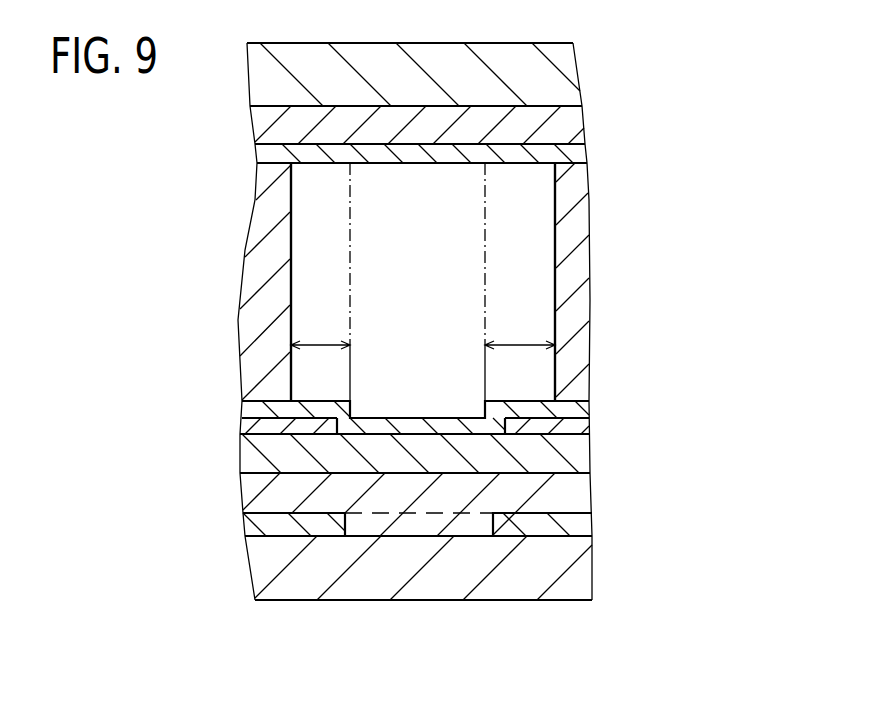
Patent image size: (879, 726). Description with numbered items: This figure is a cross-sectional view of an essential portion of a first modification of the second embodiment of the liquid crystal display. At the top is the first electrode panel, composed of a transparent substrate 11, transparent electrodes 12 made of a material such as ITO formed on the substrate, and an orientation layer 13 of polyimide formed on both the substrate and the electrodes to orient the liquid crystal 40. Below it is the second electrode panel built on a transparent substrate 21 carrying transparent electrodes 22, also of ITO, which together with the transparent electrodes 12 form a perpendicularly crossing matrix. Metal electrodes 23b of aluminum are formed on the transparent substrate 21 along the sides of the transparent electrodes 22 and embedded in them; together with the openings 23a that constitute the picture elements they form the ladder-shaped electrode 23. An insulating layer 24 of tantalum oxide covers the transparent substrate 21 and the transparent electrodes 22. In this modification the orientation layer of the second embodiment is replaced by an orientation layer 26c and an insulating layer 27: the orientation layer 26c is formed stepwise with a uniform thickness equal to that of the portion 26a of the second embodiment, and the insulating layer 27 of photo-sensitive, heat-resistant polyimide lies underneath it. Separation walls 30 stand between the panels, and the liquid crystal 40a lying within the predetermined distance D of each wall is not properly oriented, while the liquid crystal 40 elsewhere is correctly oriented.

The transparent substrate 11 is at (567, 65).
The transparent electrodes 12 is at (568, 127).
The orientation layer 13 is at (568, 153).
The separation wall 30 is at (270, 202).
The liquid crystal 40 is at (463, 273).
The anti-ferroelectric liquid crystal 40a is at (300, 277).
The orientation layer 26c is at (577, 410).
The insulating layer 27 is at (580, 428).
The portion 26a is at (458, 428).
The insulating layer 24 is at (567, 457).
The transparent electrodes 22 is at (258, 492).
The ladder-shaped electrode 23 is at (240, 530).
The opening 23a is at (353, 536).
The metal electrodes 23b is at (585, 525).
The transparent substrate 21 is at (578, 570).